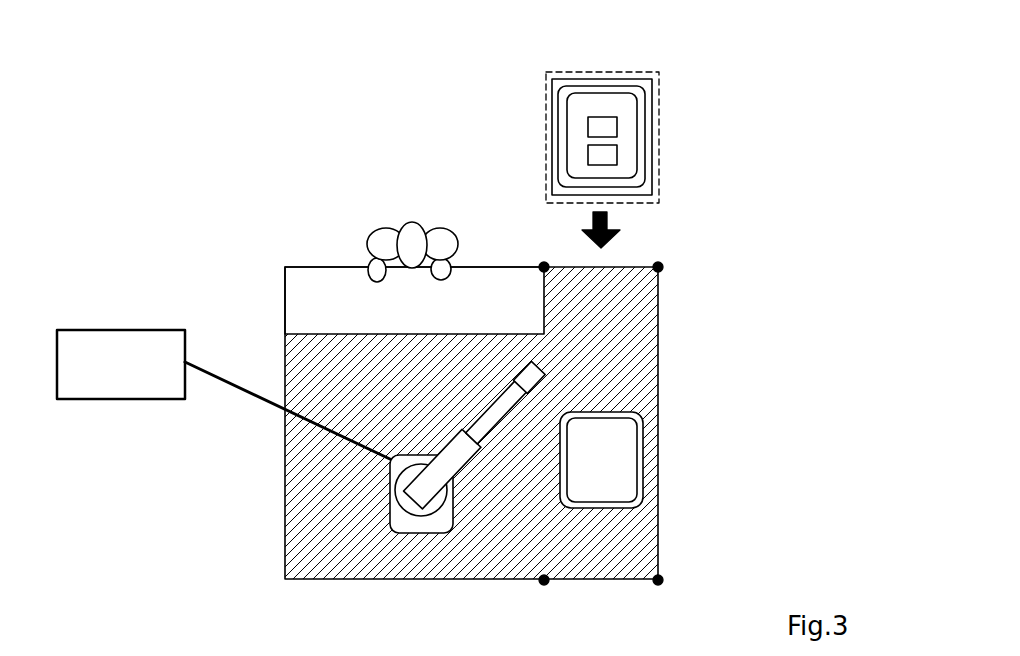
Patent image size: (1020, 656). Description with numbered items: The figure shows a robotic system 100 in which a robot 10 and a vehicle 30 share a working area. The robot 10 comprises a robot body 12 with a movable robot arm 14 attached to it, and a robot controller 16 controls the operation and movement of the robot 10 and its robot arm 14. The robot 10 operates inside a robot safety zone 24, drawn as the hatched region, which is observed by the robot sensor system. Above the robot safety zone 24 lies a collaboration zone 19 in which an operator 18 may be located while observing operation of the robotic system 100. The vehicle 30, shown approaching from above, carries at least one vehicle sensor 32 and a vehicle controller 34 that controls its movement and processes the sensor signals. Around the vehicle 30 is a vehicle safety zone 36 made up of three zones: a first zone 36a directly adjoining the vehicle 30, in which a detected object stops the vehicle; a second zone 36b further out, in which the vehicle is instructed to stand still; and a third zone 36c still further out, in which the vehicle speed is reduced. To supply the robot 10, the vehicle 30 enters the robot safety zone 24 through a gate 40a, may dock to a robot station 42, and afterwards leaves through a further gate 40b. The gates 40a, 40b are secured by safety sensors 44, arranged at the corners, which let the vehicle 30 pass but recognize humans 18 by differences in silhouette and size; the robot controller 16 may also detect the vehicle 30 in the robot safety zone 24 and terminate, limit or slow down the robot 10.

The robotic system 100 is at (220, 127).
The robot 10 is at (421, 522).
The robot body 12 is at (392, 515).
The robot arm 14 is at (490, 415).
The robot controller 16 is at (80, 400).
The operator 18 is at (372, 228).
The collaboration zone 19 is at (283, 295).
The robot safety zone 24 is at (283, 465).
The vehicle 30 is at (628, 83).
The vehicle sensor 32 is at (615, 120).
The vehicle controller 34 is at (597, 158).
The vehicle safety zone 36 is at (666, 82).
The first zone 36a is at (635, 195).
The second zone 36b is at (653, 142).
The third zone 36c is at (660, 187).
The gate 40a is at (613, 273).
The further gate 40b is at (612, 548).
The robot station 42 is at (652, 450).
The safety sensors 44 is at (544, 267).